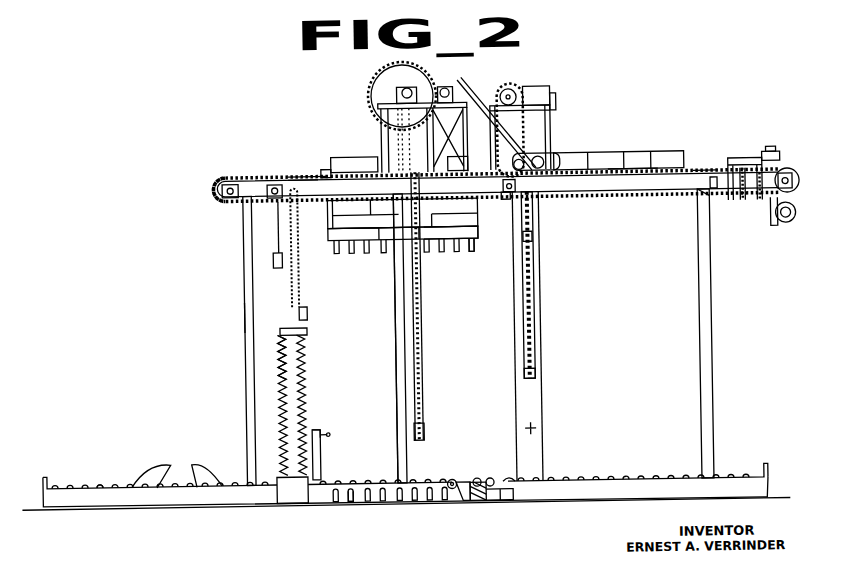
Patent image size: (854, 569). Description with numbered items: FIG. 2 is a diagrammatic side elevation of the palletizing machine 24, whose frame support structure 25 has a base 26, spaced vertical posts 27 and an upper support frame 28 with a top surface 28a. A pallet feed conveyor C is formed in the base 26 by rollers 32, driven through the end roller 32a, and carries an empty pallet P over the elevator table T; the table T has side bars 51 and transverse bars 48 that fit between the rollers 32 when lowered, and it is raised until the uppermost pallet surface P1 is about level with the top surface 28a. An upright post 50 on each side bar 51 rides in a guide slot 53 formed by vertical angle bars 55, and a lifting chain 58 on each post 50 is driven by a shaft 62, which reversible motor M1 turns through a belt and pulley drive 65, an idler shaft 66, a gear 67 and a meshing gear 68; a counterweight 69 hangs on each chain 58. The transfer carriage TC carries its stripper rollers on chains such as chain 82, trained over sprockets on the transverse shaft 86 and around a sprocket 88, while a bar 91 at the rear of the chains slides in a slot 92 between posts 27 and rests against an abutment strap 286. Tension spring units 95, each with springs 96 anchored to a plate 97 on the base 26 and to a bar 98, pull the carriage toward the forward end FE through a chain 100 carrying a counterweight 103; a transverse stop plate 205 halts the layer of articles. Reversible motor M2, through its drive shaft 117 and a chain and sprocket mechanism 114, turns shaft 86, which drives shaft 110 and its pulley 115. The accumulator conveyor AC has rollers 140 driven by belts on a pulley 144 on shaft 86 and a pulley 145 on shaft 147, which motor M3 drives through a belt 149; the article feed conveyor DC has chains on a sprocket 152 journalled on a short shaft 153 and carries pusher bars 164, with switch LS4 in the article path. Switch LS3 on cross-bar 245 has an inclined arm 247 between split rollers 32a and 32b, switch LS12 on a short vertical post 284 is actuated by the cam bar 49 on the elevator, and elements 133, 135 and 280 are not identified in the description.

The palletizing machine 24 is at (303, 126).
The frame support structure 25 is at (243, 312).
The base 26 is at (152, 496).
The vertical posts 27 is at (244, 379).
The upper support frame 28 is at (602, 195).
The top surface of the upper frame 28a is at (364, 156).
The rollers 32 is at (176, 467).
The end roller 32a is at (446, 480).
The roller 32b is at (512, 480).
The transverse bars 48 is at (466, 252).
The cam bar 49 is at (333, 220).
The post 50 is at (395, 230).
The side bars 51 is at (346, 231).
The guide slot 53 is at (397, 344).
The vertical angle bars 55 is at (397, 382).
The lifting chain 58 is at (422, 318).
The shaft 62 is at (403, 96).
The belt and pulley drive 65 is at (510, 88).
The idler shaft 66 is at (450, 88).
The gear 67 is at (460, 93).
The gear 68 is at (396, 83).
The counterweight 69 is at (422, 428).
The chain 82 is at (277, 242).
The transverse shaft 86 is at (518, 188).
The sprocket 88 is at (294, 172).
The bar 91 is at (528, 375).
The slot 92 is at (527, 430).
The tension spring units 95 is at (274, 358).
The springs 96 is at (300, 384).
The plate 97 is at (287, 493).
The bar 98 is at (306, 331).
The chain 100 is at (292, 282).
The counterweight 103 is at (308, 311).
The transverse shaft 110 is at (270, 190).
The chain and sprocket mechanism 114 is at (556, 120).
The pulley 115 is at (277, 216).
The motor drive shaft 117 is at (534, 82).
The idler sprocket 133 is at (223, 186).
The chain loop 135 is at (224, 197).
The transverse rollers 140 is at (717, 175).
The pulley 144 is at (509, 199).
The pulley 145 is at (772, 159).
The transverse shaft 147 is at (794, 178).
The belt 149 is at (793, 221).
The sprocket 152 is at (750, 201).
The short shaft 153 is at (711, 188).
The pusher bars 164 is at (744, 165).
The transverse stop plate 205 is at (326, 166).
The cross-bar 245 is at (465, 501).
The inclined arm 247 is at (487, 479).
The counterweight slabs 280 is at (557, 168).
The short vertical post 284 is at (318, 453).
The abutment strap 286 is at (533, 239).
The accumulator conveyor AC is at (632, 163).
The pallet feed conveyor C is at (95, 481).
The article feed conveyor DC is at (713, 201).
The forward end FE is at (302, 151).
The switch LS3 is at (497, 501).
The switch LS4 is at (772, 161).
The switch LS12 is at (316, 430).
The reversible motor M1 is at (550, 162).
The reversible motor M2 is at (559, 102).
The reversible motor M3 is at (774, 218).
The pallet P is at (403, 257).
The uppermost surface of the pallet P1 is at (462, 247).
The elevator table T is at (474, 258).
The transfer carriage TC is at (536, 264).